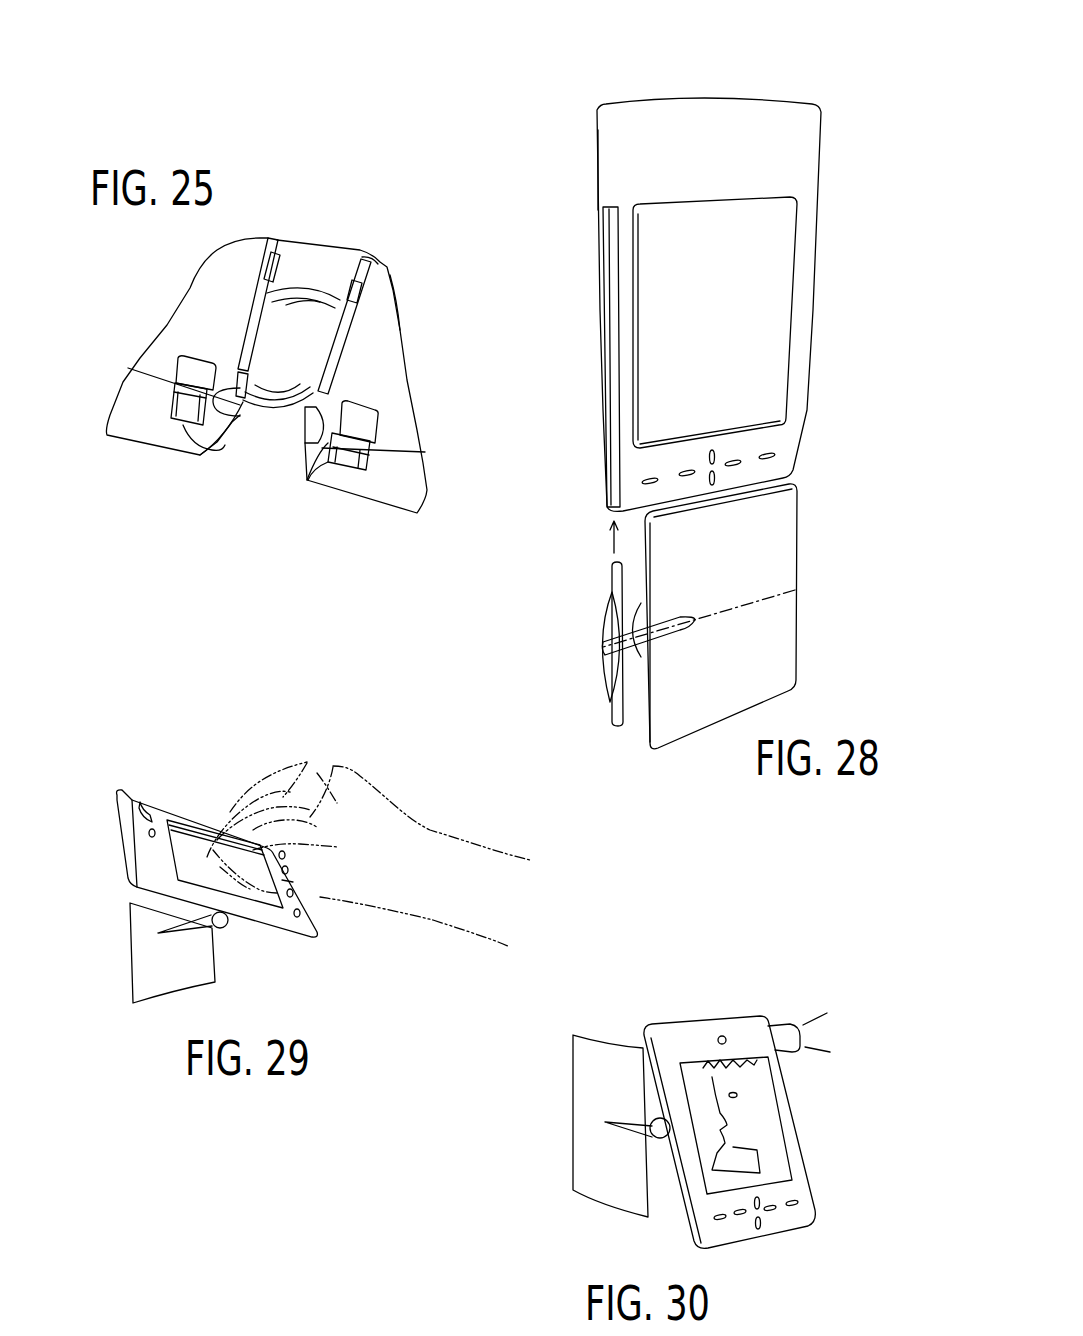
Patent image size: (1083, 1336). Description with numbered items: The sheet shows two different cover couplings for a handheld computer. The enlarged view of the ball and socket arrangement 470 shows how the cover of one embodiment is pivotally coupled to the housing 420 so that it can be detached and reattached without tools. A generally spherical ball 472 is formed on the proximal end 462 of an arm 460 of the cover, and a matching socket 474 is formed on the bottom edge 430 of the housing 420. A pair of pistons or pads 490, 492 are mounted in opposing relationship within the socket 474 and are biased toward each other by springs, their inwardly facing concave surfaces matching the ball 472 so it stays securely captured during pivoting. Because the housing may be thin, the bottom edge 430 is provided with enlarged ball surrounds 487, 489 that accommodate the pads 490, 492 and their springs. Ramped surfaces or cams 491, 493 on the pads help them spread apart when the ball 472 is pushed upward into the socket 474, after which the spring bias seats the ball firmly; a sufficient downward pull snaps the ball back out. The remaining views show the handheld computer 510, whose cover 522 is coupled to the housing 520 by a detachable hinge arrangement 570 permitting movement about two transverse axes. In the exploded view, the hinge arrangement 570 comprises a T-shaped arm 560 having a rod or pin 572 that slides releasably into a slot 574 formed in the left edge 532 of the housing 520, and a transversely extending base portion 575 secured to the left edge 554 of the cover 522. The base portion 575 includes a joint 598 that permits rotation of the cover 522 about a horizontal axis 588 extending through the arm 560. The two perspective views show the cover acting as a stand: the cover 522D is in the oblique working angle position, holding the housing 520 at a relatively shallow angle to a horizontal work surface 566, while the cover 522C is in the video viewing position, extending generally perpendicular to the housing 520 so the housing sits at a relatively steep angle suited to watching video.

In FIG. 25, the housing 420 is at (200, 306).
In FIG. 25, the bottom edge 430 is at (372, 507).
In FIG. 25, the arm 460 is at (375, 268).
In FIG. 25, the proximal end 462 is at (363, 258).
In FIG. 25, the ball and socket arrangement 470 is at (240, 458).
In FIG. 25, the ball 472 is at (258, 438).
In FIG. 25, the socket 474 is at (270, 462).
In FIG. 25, the ball surround 487 is at (268, 242).
In FIG. 25, the ball surround 489 is at (378, 306).
In FIG. 25, the pad 490 is at (248, 320).
In FIG. 25, the cam 491 is at (215, 455).
In FIG. 25, the pad 492 is at (344, 330).
In FIG. 25, the cam 493 is at (296, 460).
In FIG. 28, the handheld computer 510 is at (842, 88).
In FIG. 29, the handheld computer 510 is at (105, 745).
In FIG. 30, the handheld computer 510 is at (858, 1218).
In FIG. 28, the housing 520 is at (720, 100).
In FIG. 29, the housing 520 is at (280, 938).
In FIG. 30, the housing 520 is at (740, 1020).
In FIG. 28, the cover 522 is at (797, 648).
In FIG. 30, the cover 522C is at (573, 1160).
In FIG. 29, the cover 522D is at (130, 955).
In FIG. 28, the left edge 532 is at (597, 178).
In FIG. 28, the left edge 554 is at (642, 720).
In FIG. 28, the T-shaped arm 560 is at (598, 648).
In FIG. 29, the horizontal work surface 566 is at (215, 958).
In FIG. 28, the detachable hinge arrangement 570 is at (527, 605).
In FIG. 28, the pin 572 is at (610, 578).
In FIG. 28, the slot 574 is at (603, 462).
In FIG. 28, the base portion 575 is at (650, 672).
In FIG. 30, the base portion 575 is at (637, 1128).
In FIG. 28, the horizontal axis 588 is at (800, 590).
In FIG. 28, the joint 598 is at (630, 612).